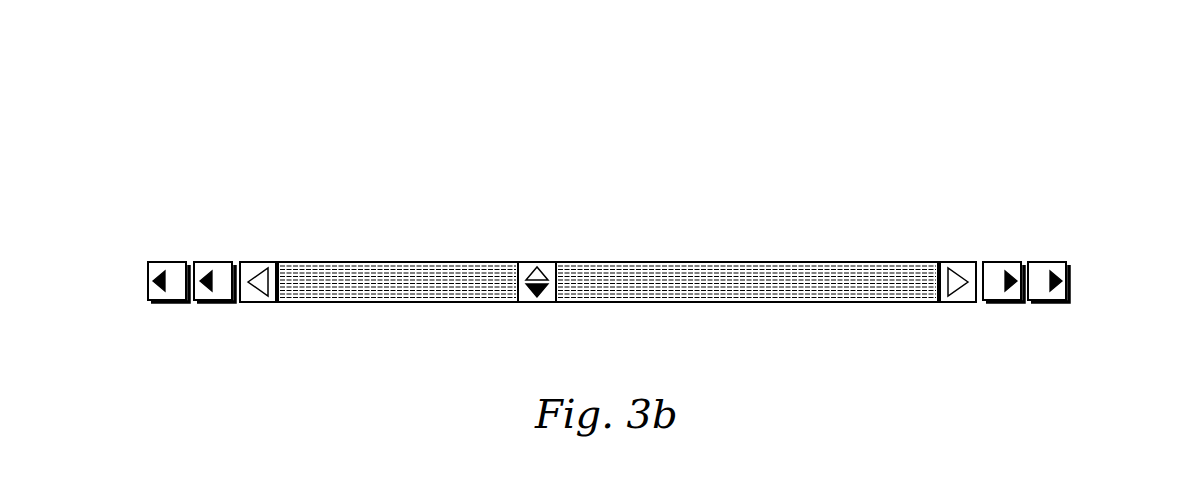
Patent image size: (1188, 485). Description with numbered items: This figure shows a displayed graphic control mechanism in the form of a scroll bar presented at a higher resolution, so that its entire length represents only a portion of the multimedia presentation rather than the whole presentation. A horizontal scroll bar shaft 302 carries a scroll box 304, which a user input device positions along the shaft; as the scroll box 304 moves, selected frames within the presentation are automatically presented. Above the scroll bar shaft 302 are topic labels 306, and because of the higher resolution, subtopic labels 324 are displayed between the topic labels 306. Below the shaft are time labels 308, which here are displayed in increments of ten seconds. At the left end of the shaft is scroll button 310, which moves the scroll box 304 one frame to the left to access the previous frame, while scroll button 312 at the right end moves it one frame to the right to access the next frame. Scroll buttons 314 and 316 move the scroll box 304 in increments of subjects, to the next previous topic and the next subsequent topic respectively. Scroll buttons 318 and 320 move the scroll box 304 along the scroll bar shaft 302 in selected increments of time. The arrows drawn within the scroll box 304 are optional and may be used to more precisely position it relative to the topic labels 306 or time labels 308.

The scroll bar shaft 302 is at (604, 262).
The scroll box 304 is at (524, 304).
The topic labels 306 is at (290, 118).
The time labels 308 is at (303, 323).
The scroll button 310 is at (262, 262).
The scroll button 312 is at (962, 262).
The scroll button 314 is at (207, 262).
The scroll button 316 is at (1012, 262).
The scroll button 318 is at (148, 282).
The scroll button 320 is at (1055, 262).
The subtopic labels 324 is at (345, 44).